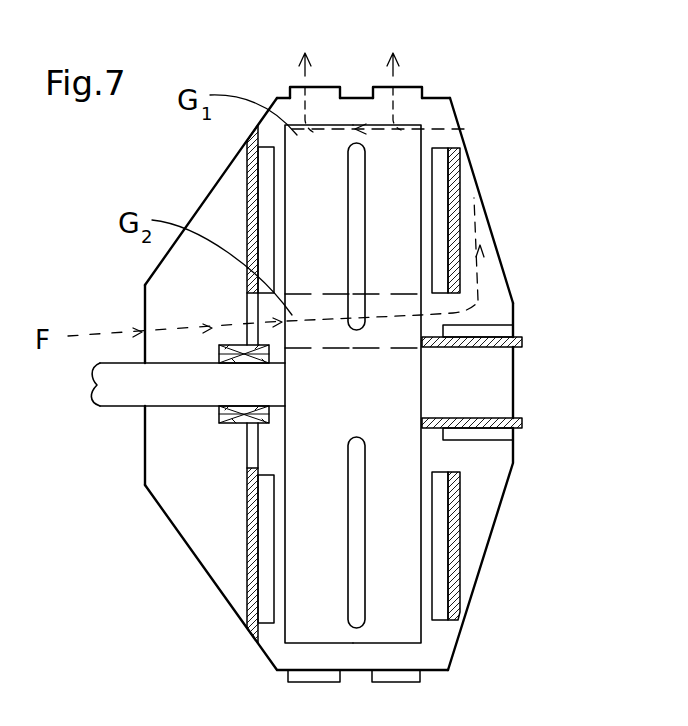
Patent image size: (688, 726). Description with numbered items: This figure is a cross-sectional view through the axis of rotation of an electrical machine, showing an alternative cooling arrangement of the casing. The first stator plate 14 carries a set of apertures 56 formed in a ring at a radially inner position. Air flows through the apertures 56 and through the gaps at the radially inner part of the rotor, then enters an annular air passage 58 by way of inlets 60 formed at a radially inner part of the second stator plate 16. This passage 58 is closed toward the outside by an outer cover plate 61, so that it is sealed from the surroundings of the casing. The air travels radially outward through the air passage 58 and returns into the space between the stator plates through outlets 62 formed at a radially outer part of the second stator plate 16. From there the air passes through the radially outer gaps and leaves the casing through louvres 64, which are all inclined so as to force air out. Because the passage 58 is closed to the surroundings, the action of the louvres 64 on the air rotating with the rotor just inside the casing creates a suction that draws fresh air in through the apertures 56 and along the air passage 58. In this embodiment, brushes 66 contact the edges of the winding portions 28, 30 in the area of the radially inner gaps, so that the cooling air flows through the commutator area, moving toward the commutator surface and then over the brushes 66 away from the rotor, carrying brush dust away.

The first stator plate 14 is at (143, 302).
The second stator plate 16 is at (454, 100).
The winding portion 28 is at (409, 268).
The winding portion 30 is at (334, 268).
The apertures 56 is at (250, 442).
The annular air passage 58 is at (492, 275).
The inlets 60 is at (477, 305).
The outer cover plate 61 is at (482, 200).
The outlets 62 is at (456, 128).
The louvres 64 is at (412, 92).
The brushes 66 is at (518, 427).